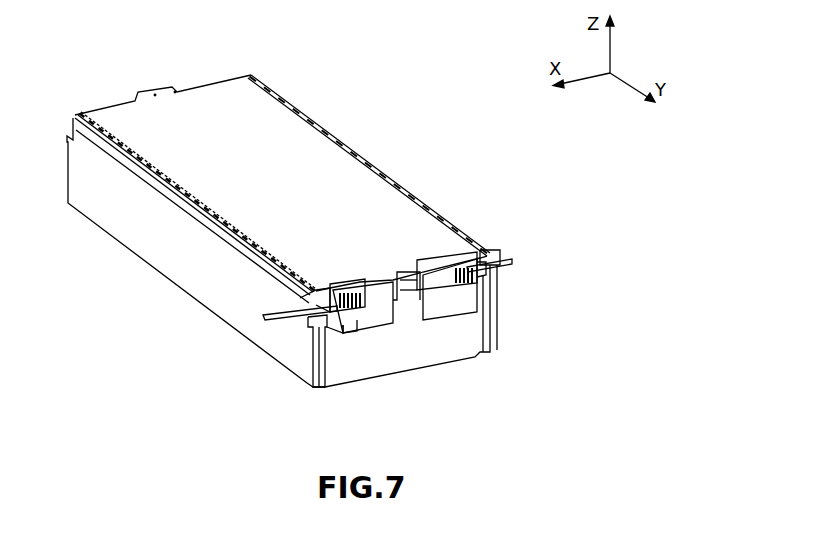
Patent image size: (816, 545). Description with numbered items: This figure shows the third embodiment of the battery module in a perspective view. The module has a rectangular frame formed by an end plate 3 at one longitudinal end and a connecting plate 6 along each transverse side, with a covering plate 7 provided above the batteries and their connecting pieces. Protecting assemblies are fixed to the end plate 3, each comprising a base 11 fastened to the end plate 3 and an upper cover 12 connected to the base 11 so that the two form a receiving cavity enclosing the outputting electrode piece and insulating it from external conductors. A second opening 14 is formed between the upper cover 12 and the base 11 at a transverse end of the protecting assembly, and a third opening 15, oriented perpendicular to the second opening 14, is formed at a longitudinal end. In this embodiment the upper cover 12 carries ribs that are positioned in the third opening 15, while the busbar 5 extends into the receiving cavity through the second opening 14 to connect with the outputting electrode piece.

The end plate 3 is at (430, 350).
The busbar 5 is at (280, 311).
The connecting plate 6 is at (157, 250).
The covering plate 7 is at (293, 130).
The base 11 is at (367, 323).
The upper cover 12 is at (357, 279).
The second opening 14 is at (317, 290).
The third opening 15 is at (360, 306).